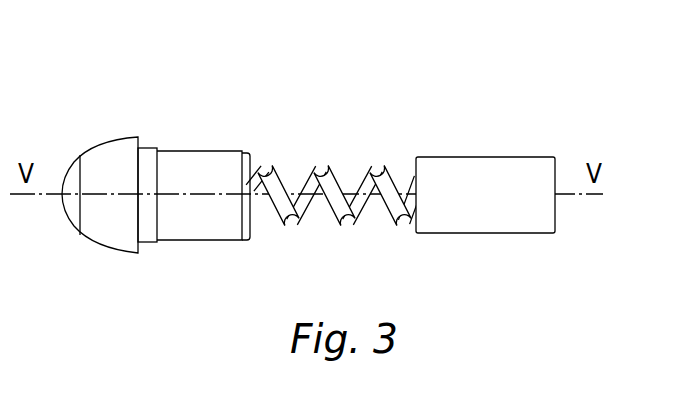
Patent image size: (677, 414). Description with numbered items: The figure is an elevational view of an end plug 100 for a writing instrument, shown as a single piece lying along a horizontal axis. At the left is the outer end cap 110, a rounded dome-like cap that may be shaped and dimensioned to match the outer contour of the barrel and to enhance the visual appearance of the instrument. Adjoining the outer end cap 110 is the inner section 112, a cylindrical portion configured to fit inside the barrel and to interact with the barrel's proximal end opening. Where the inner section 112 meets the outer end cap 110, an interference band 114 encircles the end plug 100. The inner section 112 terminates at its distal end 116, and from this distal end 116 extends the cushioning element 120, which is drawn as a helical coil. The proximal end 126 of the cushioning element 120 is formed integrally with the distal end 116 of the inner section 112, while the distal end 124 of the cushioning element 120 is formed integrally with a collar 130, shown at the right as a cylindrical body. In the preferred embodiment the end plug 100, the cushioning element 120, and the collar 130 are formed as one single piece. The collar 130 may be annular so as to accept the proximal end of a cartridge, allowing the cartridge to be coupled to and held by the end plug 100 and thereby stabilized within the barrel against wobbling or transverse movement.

The end plug 100 is at (536, 105).
The outer end cap 110 is at (75, 157).
The inner section 112 is at (210, 150).
The interference band 114 is at (150, 147).
The distal end of inner section 116 is at (247, 242).
The cushioning element 120 is at (315, 161).
The distal end of cushioning element 124 is at (404, 191).
The proximal end of cushioning element 126 is at (258, 161).
The collar 130 is at (510, 234).